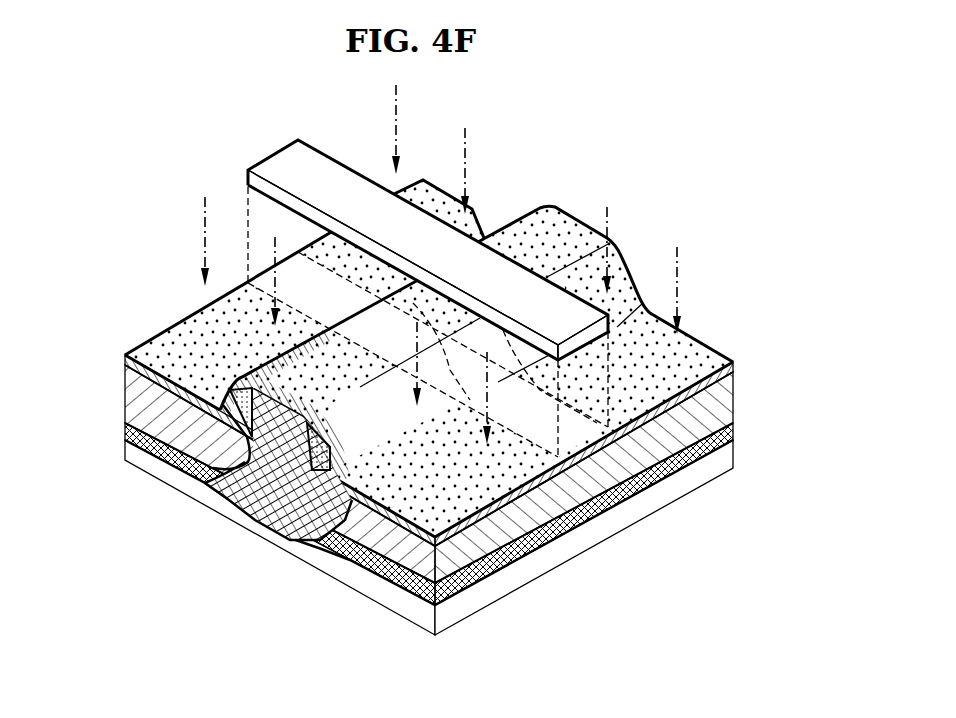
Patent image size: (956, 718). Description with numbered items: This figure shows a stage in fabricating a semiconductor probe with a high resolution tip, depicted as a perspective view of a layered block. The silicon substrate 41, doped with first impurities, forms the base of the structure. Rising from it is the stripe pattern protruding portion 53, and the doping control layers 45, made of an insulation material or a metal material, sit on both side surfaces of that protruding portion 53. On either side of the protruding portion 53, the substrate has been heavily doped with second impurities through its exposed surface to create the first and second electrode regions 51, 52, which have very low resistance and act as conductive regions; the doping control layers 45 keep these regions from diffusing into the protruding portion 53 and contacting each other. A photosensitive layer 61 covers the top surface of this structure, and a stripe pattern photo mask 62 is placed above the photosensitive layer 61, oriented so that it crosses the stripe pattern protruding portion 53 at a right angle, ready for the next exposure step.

The silicon substrate 41 is at (735, 453).
The doping control layer 45 is at (283, 515).
The first electrode region 51 is at (125, 393).
The second electrode region 52 is at (413, 565).
The stripe pattern protruding portion 53 is at (200, 478).
The photosensitive layer 61 is at (125, 357).
The stripe pattern photo mask 62 is at (283, 160).